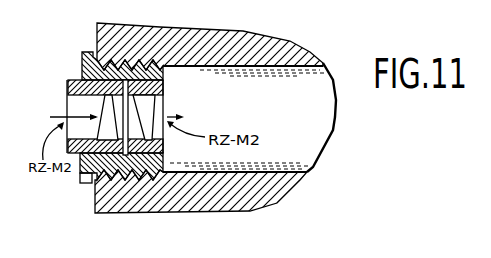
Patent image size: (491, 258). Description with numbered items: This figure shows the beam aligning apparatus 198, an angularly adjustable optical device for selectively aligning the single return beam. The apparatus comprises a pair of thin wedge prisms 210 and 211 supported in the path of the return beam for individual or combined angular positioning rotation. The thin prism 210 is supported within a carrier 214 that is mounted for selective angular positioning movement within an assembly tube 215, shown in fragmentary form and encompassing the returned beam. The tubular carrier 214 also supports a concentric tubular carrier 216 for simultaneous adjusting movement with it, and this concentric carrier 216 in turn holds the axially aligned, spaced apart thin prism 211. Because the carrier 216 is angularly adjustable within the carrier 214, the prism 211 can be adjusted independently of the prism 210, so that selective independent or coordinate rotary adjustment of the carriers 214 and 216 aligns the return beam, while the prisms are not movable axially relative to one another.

The beam aligning apparatus 198 is at (80, 179).
The thin wedge prism 210 is at (145, 103).
The thin wedge prism 211 is at (103, 110).
The carrier 214 is at (165, 77).
The assembly tube 215 is at (246, 42).
The concentric tubular carrier 216 is at (68, 84).